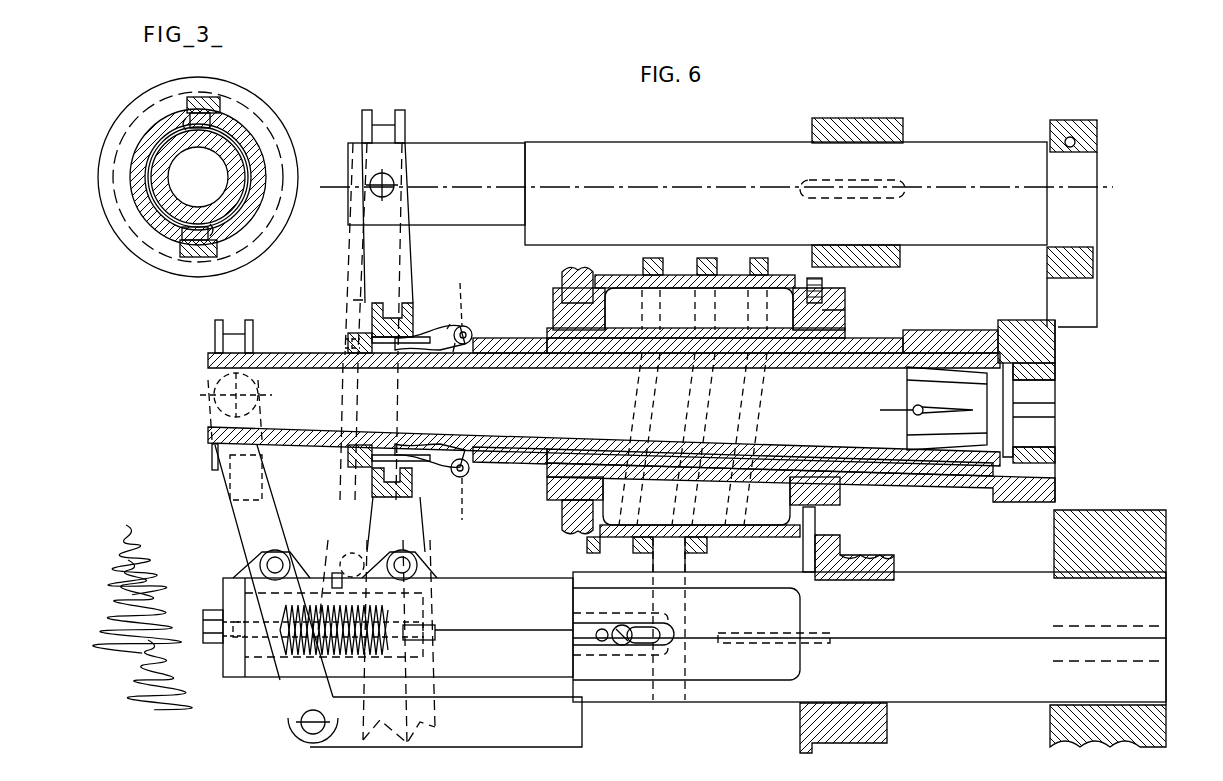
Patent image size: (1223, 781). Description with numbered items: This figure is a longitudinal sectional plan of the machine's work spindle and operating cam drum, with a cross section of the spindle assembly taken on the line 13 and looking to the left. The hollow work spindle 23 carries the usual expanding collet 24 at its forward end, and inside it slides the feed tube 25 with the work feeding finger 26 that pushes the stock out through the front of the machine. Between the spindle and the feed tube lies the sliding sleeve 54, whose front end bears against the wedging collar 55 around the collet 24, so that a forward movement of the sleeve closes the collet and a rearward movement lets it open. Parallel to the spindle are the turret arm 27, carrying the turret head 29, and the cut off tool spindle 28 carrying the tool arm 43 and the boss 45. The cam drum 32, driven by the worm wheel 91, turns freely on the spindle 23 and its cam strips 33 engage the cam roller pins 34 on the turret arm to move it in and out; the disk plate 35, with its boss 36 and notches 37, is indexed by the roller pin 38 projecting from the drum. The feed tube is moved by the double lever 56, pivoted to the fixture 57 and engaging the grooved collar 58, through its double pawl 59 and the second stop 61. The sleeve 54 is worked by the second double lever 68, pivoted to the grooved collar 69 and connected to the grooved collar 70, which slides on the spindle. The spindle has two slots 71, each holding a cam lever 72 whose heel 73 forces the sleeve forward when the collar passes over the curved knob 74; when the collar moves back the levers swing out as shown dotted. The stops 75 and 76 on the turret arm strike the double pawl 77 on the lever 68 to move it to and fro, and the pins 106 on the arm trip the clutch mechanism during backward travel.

In FIG. 6, the section line 13— 13 is at (465, 402).
In FIG. 13, the hollow work spindle 23 is at (255, 206).
In FIG. 6, the hollow work spindle 23 is at (547, 333).
In FIG. 6, the expanding collet 24 is at (1034, 413).
In FIG. 13, the feed tube 25 is at (176, 160).
In FIG. 6, the feed tube 25 is at (558, 370).
In FIG. 6, the work feeding finger 26 is at (933, 408).
In FIG. 6, the turret arm 27 is at (869, 620).
In FIG. 6, the cut off tool spindle 28 is at (716, 193).
In FIG. 6, the turret head 29 is at (1168, 572).
In FIG. 6, the cam drum 32 is at (620, 277).
In FIG. 6, the cam strips 33 is at (755, 260).
In FIG. 6, the cam roller pins 34 is at (688, 560).
In FIG. 6, the disk plate 35 is at (834, 538).
In FIG. 6, the boss 36 is at (890, 556).
In FIG. 6, the notches 37 is at (803, 552).
In FIG. 6, the roller pin 38 is at (823, 290).
In FIG. 6, the tool arm 43 is at (1098, 262).
In FIG. 6, the boss 45 is at (845, 128).
In FIG. 13, the sliding sleeve 54 is at (222, 235).
In FIG. 6, the sliding sleeve 54 is at (966, 330).
In FIG. 6, the wedging collar 55 is at (1040, 368).
In FIG. 6, the double lever 56 is at (275, 548).
In FIG. 6, the fixture 57 is at (300, 724).
In FIG. 6, the grooved collar 58 is at (218, 336).
In FIG. 6, the double pawl 59 is at (288, 555).
In FIG. 6, the second stop 61 is at (224, 577).
In FIG. 6, the second double lever 68 is at (377, 426).
In FIG. 6, the grooved collar 69 is at (378, 181).
In FIG. 13, the grooved collar 70 is at (268, 118).
In FIG. 6, the grooved collar 70 is at (344, 316).
In FIG. 13, the slots 71 is at (190, 116).
In FIG. 6, the slots 71 is at (420, 340).
In FIG. 13, the cam lever 72 is at (192, 108).
In FIG. 6, the cam lever 72 is at (450, 328).
In FIG. 6, the heel 73 is at (470, 332).
In FIG. 6, the curved knob 74 is at (348, 342).
In FIG. 6, the stop 75 is at (432, 628).
In FIG. 6, the stop 76 is at (338, 588).
In FIG. 6, the double pawl 77 is at (352, 552).
In FIG. 6, the worm wheel 91 is at (562, 285).
In FIG. 6, the pins 106 is at (604, 642).